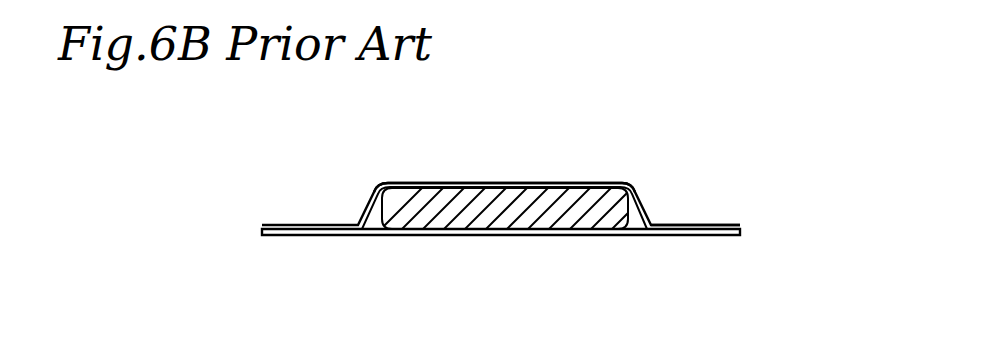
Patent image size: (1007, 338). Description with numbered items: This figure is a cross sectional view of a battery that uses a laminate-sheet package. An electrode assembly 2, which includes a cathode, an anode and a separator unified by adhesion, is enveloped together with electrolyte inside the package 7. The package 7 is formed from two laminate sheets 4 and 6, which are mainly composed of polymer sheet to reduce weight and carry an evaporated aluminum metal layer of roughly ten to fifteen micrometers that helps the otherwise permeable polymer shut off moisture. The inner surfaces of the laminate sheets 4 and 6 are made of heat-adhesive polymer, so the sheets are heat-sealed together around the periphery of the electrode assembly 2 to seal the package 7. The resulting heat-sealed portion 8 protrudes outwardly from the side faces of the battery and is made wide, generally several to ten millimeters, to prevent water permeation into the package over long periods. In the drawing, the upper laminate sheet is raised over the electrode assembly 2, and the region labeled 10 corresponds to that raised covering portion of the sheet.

The electrode assembly 2 is at (472, 202).
The laminate sheet 4 is at (272, 236).
The laminate sheet 6 is at (272, 226).
The package 7 is at (215, 180).
The heat-sealed portion 8 is at (670, 225).
The raised dome portion of cover sheet 10 is at (553, 182).